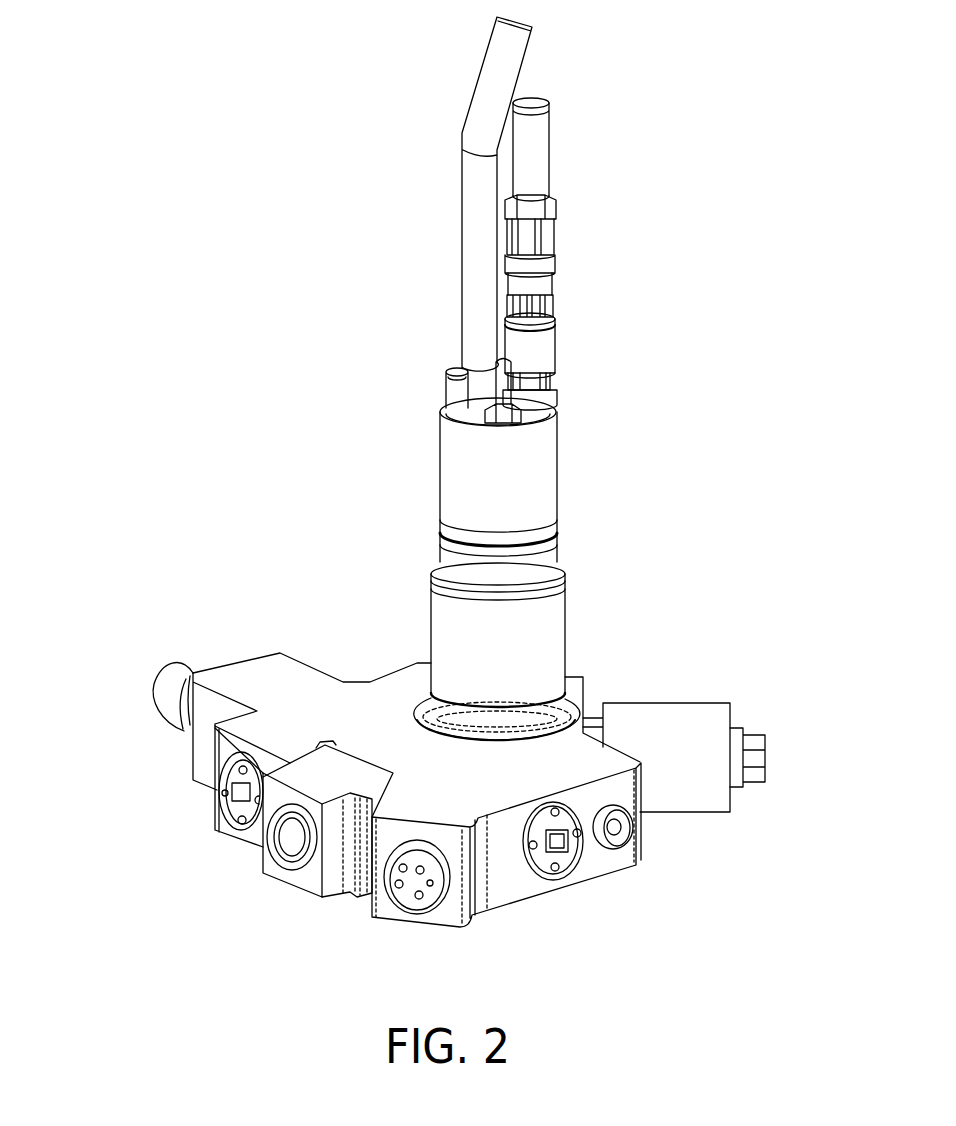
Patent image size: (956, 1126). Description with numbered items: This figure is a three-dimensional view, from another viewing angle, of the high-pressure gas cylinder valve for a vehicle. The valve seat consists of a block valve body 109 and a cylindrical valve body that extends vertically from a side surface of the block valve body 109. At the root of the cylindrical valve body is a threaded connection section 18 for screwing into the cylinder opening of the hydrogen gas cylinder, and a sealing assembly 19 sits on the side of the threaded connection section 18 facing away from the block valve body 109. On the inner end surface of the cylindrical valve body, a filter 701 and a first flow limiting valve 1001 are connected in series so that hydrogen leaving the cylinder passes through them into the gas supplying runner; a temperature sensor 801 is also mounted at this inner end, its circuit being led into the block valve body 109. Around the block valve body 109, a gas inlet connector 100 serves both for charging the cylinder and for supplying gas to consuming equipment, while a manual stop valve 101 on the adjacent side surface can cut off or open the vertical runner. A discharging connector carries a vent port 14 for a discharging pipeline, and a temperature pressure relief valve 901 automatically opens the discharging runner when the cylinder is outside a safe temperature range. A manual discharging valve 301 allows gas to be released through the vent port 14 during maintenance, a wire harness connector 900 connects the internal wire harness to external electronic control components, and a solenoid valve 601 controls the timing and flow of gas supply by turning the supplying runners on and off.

The filter 701 is at (534, 171).
The first flow limiting valve 1001 is at (530, 337).
The temperature sensor 801 is at (510, 376).
The sealing assembly 19 is at (558, 528).
The threaded connection section 18 is at (552, 628).
The block valve body 109 is at (308, 673).
The gas inlet connector 100 is at (170, 700).
The manual stop valve 101 is at (227, 813).
The vent port 14 is at (297, 845).
The temperature pressure relief valve 901 is at (407, 887).
The manual discharging valve 301 is at (571, 864).
The wire harness connector 900 is at (624, 833).
The solenoid valve 601 is at (713, 713).